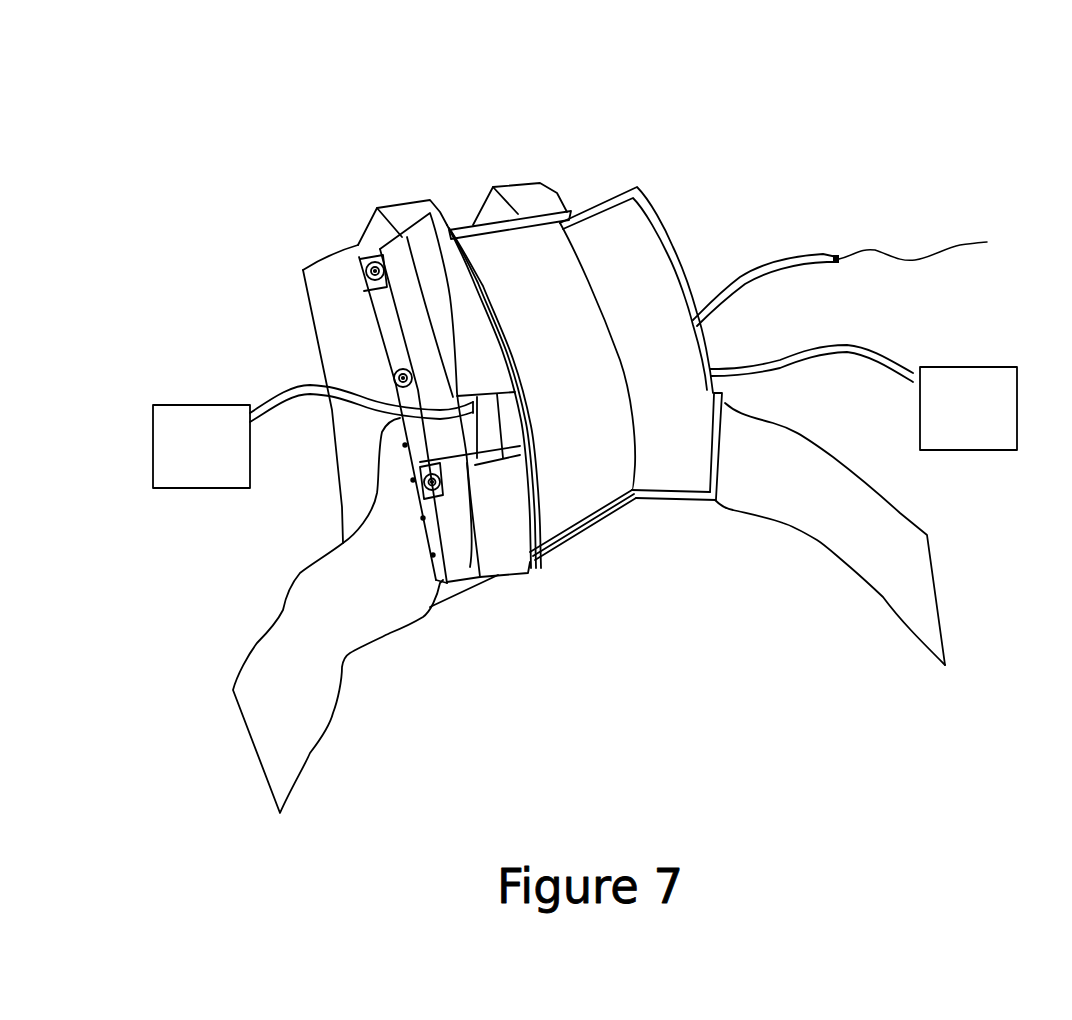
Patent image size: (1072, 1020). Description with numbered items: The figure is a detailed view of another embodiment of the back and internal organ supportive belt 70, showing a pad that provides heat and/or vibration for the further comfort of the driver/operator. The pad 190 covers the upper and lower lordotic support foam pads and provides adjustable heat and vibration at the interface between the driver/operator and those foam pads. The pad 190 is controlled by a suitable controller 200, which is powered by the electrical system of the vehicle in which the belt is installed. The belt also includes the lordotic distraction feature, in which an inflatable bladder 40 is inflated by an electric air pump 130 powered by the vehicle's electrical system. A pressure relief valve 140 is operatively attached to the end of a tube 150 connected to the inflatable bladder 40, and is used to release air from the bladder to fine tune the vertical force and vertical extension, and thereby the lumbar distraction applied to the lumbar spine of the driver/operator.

The back and internal organ supportive belt 70 is at (236, 150).
The inflatable bladder 40 is at (488, 428).
The electric air pump 130 is at (197, 417).
The pressure relief valve 140 is at (945, 239).
The tube 150 is at (765, 265).
The pad 190 is at (590, 465).
The controller 200 is at (992, 430).